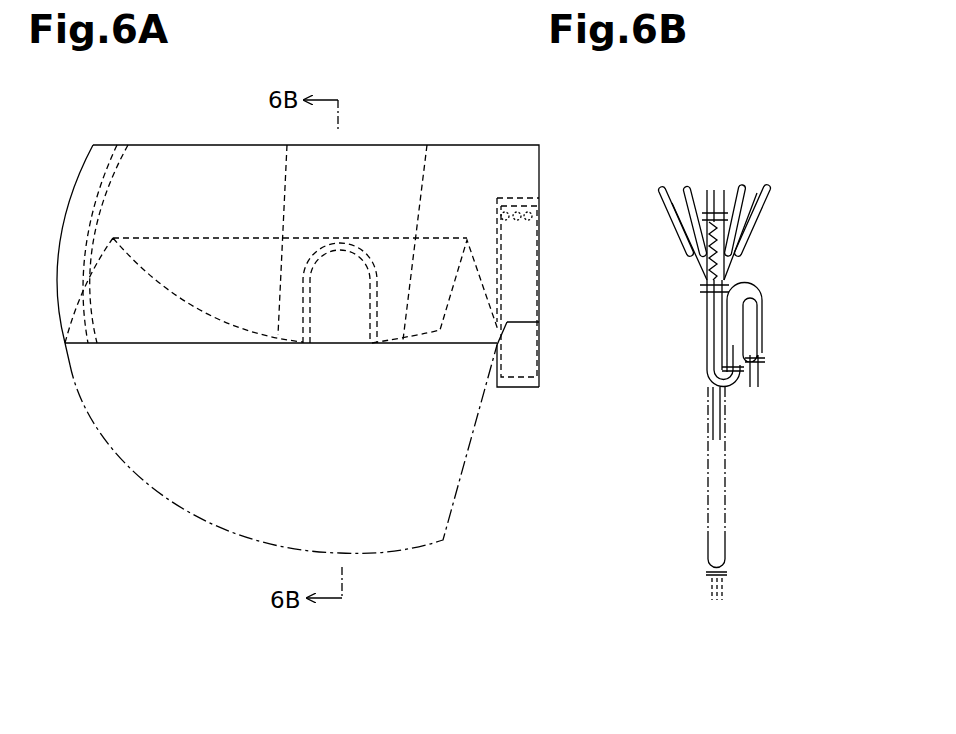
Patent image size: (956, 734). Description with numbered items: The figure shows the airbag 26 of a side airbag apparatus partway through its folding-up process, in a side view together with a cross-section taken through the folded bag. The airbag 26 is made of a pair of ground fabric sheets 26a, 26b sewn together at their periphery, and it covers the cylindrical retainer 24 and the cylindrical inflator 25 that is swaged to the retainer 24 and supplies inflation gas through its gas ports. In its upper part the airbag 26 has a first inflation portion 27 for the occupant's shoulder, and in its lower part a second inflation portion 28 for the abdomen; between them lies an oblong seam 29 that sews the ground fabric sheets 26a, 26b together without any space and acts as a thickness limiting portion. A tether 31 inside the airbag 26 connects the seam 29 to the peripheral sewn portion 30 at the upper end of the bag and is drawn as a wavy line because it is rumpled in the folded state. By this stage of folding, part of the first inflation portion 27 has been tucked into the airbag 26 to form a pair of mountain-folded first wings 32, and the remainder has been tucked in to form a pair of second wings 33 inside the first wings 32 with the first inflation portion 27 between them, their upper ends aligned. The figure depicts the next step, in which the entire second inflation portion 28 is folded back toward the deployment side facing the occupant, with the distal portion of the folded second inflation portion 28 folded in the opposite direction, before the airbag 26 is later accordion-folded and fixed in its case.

In FIG. 6A, the retainer 24 is at (519, 388).
In FIG. 6A, the inflator 25 is at (523, 273).
In FIG. 6A, the airbag 26 is at (173, 105).
In FIG. 6B, the airbag 26 is at (645, 137).
In FIG. 6A, the ground fabric sheet 26a is at (83, 170).
In FIG. 6B, the ground fabric sheet 26a is at (723, 190).
In FIG. 6A, the ground fabric sheet 26b is at (76, 226).
In FIG. 6B, the ground fabric sheet 26b is at (705, 190).
In FIG. 6B, the first inflation portion 27 is at (748, 252).
In FIG. 6A, the second inflation portion 28 is at (120, 317).
In FIG. 6B, the second inflation portion 28 is at (763, 318).
In FIG. 6A, the seam 29 is at (303, 277).
In FIG. 6B, the seam 29 is at (703, 292).
In FIG. 6B, the peripheral sewn portion 30 is at (706, 216).
In FIG. 6A, the tether 31 is at (420, 190).
In FIG. 6B, the tether 31 is at (713, 347).
In FIG. 6A, the first wings 32 is at (451, 145).
In FIG. 6B, the first wings 32 is at (660, 190).
In FIG. 6B, the second wings 33 is at (687, 188).